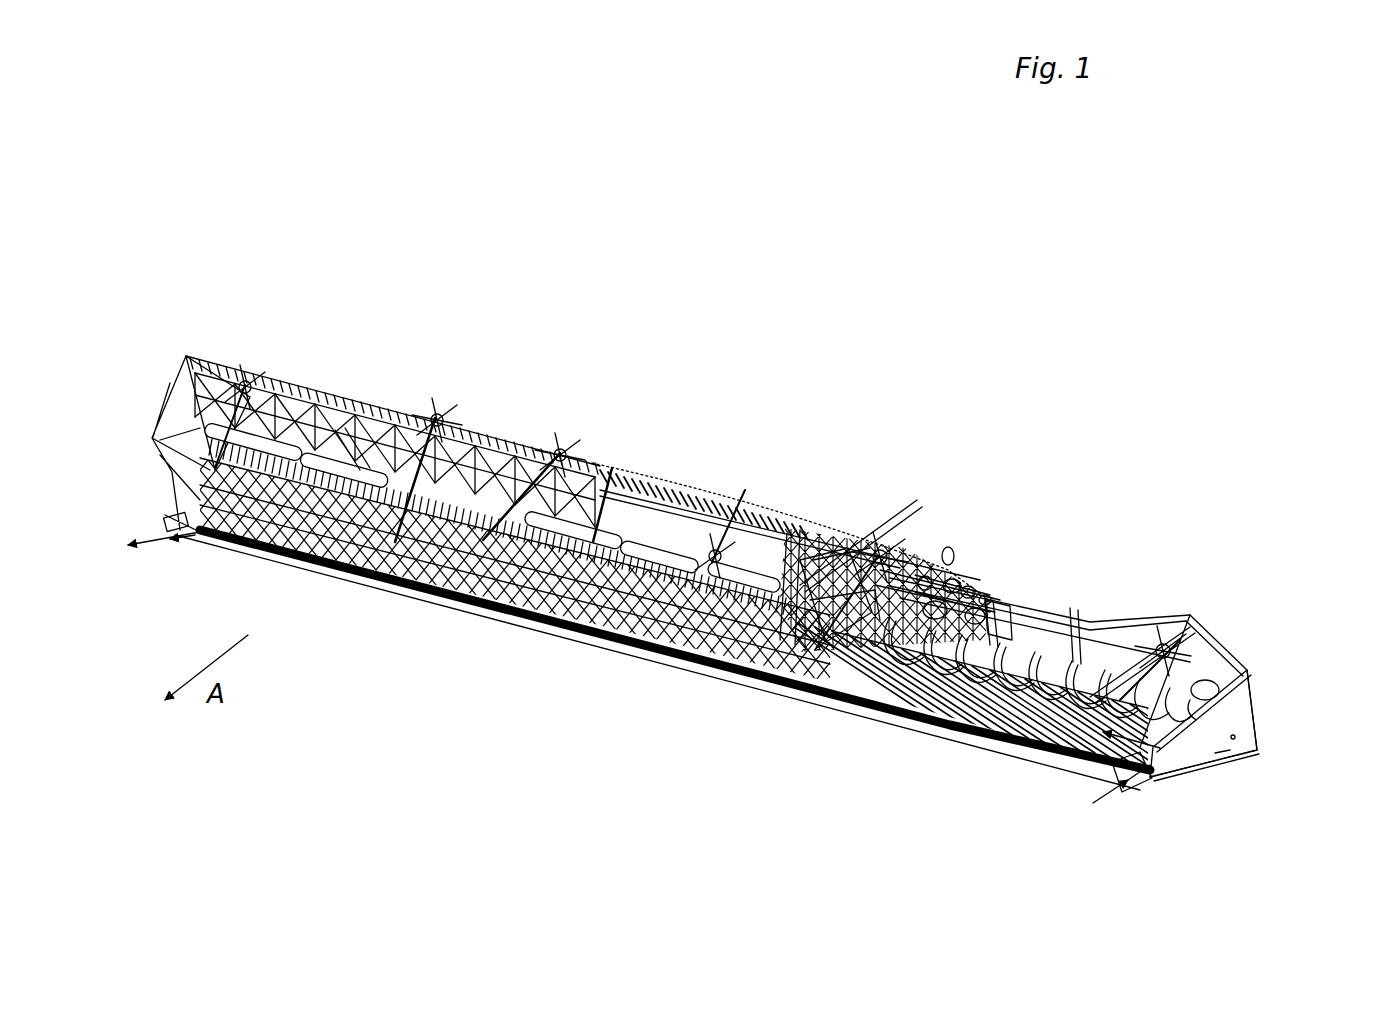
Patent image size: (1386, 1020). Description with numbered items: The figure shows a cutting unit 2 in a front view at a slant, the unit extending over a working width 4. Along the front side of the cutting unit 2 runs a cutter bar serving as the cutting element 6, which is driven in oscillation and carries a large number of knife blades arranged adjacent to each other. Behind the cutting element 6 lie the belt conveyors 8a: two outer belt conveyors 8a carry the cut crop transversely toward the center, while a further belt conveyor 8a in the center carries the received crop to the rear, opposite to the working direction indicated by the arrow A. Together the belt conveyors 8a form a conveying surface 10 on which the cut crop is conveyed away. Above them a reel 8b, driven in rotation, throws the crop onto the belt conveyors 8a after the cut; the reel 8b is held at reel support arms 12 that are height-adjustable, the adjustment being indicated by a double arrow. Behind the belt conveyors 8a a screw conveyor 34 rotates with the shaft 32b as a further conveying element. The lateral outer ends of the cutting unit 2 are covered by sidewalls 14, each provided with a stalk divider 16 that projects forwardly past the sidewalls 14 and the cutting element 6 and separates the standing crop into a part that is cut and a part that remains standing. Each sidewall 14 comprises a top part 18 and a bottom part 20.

The cutting unit 2 is at (620, 318).
The working width 4 is at (1030, 765).
The cutting element 6 is at (856, 700).
The belt conveyors 8a is at (392, 555).
The reel 8b is at (345, 455).
The conveying surface 10 is at (1307, 855).
The reel support arms 12 is at (245, 378).
The sidewalls 14 is at (1233, 712).
The stalk divider 16 is at (165, 515).
The top part 18 is at (1230, 700).
The bottom part 20 is at (1240, 753).
The shaft 32b is at (995, 612).
The screw conveyor 34 is at (1043, 677).